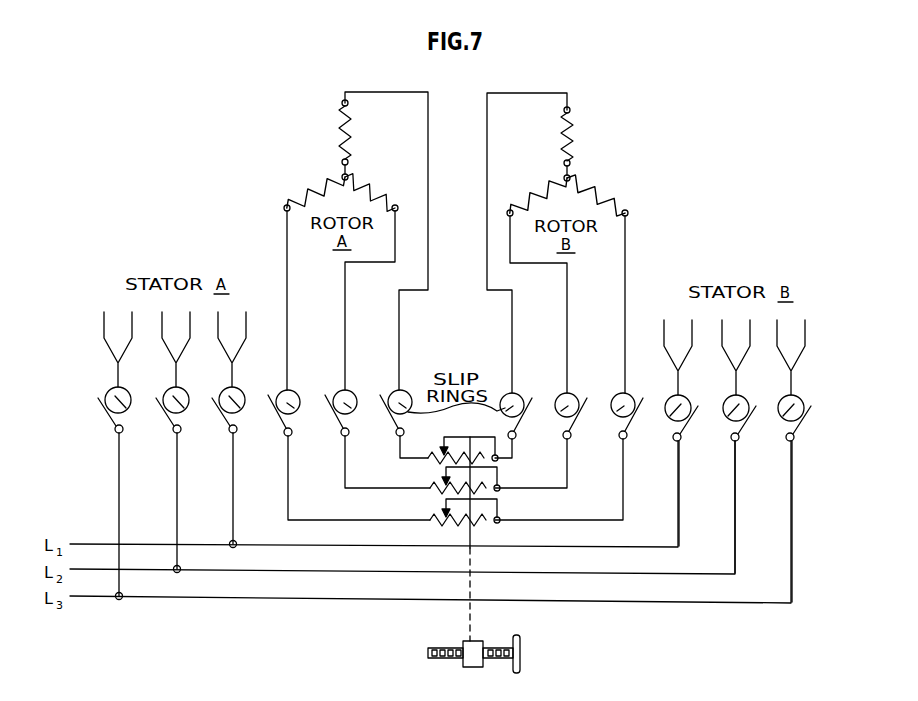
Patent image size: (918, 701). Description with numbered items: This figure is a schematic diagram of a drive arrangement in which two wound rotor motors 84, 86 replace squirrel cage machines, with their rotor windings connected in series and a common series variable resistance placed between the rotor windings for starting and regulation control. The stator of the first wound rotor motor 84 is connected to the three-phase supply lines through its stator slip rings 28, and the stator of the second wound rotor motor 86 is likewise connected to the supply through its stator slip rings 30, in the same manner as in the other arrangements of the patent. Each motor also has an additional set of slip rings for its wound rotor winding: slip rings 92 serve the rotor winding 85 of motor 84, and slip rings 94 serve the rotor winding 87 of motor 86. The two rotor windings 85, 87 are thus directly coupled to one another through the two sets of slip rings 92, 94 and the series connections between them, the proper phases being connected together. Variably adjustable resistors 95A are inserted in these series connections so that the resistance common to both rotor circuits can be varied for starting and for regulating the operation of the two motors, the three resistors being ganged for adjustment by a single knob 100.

The slip rings of the stator of motor 84 28 is at (165, 410).
The slip rings for the stator of motor 86 30 is at (725, 418).
The wound rotor motor 84 is at (299, 175).
The rotor winding 85 is at (350, 178).
The wound rotor motor 86 is at (614, 181).
The rotor winding 87 is at (528, 188).
The slip rings 92 is at (340, 394).
The slip rings 94 is at (561, 397).
The variably adjustable resistors 95A is at (436, 518).
The rheostat adjusting knob 100 is at (488, 661).